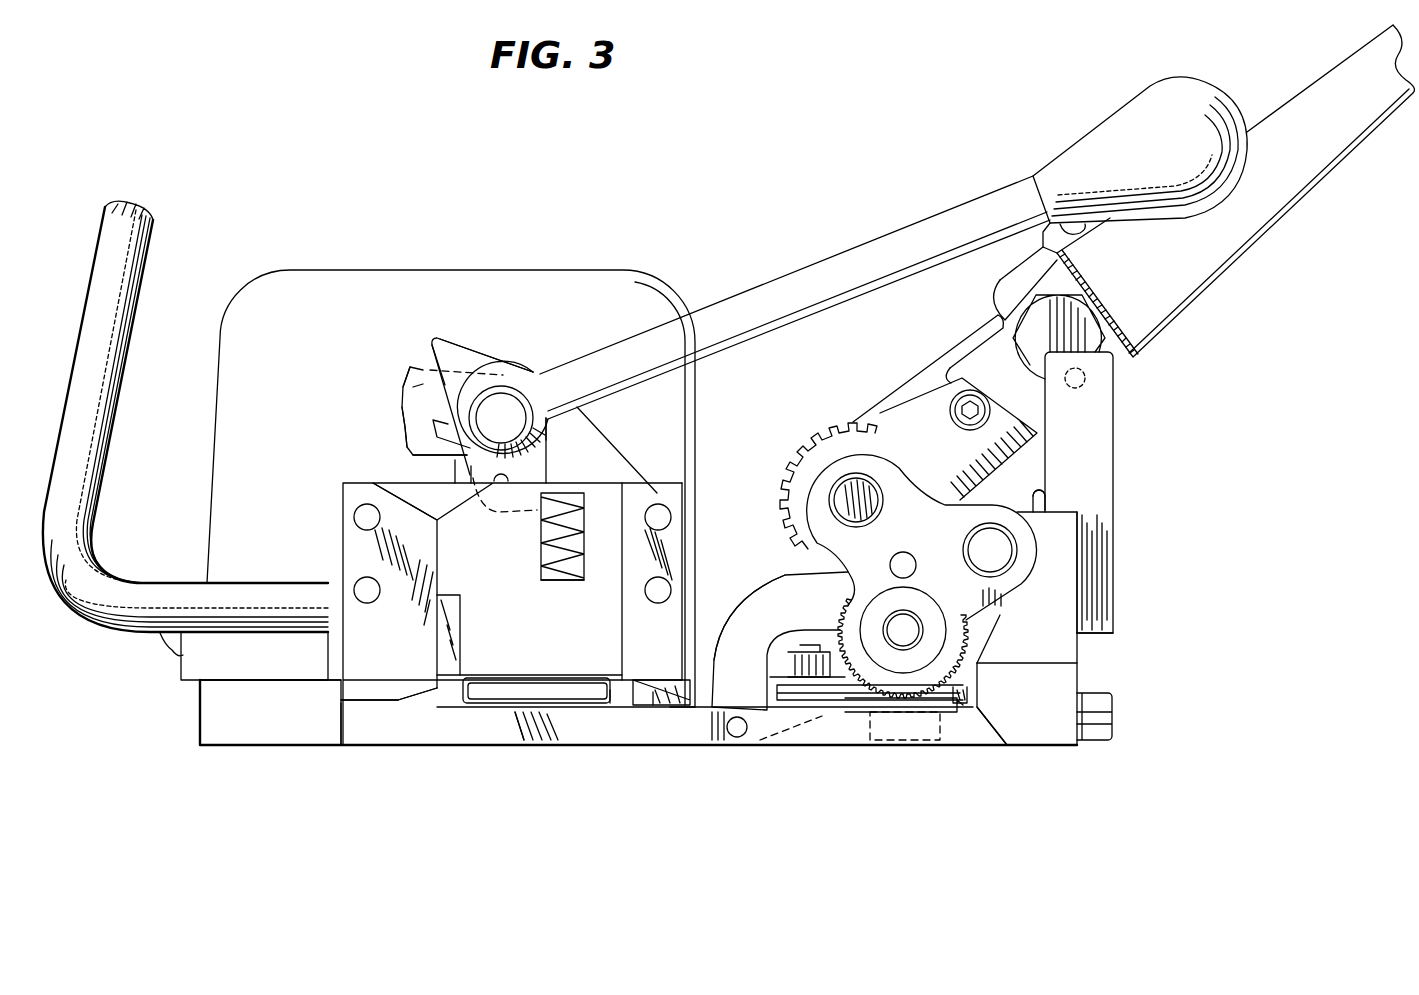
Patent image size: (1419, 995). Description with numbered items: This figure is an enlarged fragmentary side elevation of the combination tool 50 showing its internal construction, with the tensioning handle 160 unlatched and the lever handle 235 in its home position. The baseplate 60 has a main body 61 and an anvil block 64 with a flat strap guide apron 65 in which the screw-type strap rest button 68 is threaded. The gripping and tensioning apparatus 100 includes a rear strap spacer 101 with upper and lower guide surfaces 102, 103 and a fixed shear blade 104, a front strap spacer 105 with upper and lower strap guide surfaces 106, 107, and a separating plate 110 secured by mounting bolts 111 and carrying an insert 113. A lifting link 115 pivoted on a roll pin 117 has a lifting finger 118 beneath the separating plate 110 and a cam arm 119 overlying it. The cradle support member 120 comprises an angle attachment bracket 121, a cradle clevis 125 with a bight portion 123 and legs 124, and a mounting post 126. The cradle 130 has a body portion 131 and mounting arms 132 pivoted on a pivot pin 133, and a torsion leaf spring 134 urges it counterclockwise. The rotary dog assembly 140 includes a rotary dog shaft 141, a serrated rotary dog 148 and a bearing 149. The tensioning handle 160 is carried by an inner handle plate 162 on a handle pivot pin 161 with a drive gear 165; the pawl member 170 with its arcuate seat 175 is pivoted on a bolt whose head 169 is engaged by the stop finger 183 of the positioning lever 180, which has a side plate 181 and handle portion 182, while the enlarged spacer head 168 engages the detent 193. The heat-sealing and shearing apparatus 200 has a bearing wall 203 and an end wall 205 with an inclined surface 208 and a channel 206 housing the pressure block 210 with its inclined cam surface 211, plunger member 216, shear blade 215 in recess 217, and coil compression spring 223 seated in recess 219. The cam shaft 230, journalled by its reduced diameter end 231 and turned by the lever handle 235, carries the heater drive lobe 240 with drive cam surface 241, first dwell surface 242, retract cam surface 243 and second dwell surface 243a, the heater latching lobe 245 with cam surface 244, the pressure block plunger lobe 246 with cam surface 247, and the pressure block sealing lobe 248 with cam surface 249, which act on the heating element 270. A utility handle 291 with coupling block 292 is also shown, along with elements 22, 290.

The bolt 22 is at (1112, 723).
The combination tool 50 is at (712, 161).
The baseplate 60 is at (373, 748).
The main body 61 is at (272, 737).
The anvil block 64 is at (550, 745).
The strap guide apron 65 is at (613, 707).
The strap rest button 68 is at (870, 733).
The gripping and tensioning apparatus 100 is at (1142, 463).
The rear strap spacer 101 is at (357, 690).
The upper guide surface 102 is at (410, 677).
The lower guide surface 103 is at (357, 703).
The fixed shear blade 104 is at (430, 703).
The front strap spacer 105 is at (670, 695).
The upper strap guide surface 106 is at (653, 683).
The lower strap guide surface 107 is at (648, 703).
The separating plate 110 is at (953, 703).
The mounting bolts 111 is at (800, 627).
The insert 113 is at (967, 672).
The lifting link 115 is at (730, 618).
The roll pin 117 is at (740, 739).
The lifting finger 118 is at (793, 737).
The cam arm 119 is at (780, 593).
The cradle support member 120 is at (1105, 587).
The angle attachment bracket 121 is at (1058, 737).
The bight portion 123 is at (1077, 623).
The legs 124 is at (1062, 653).
The cradle clevis 125 is at (1060, 567).
The mounting post 126 is at (1100, 427).
The cradle 130 is at (928, 526).
The body portion 131 is at (897, 510).
The mounting arms 132 is at (1020, 625).
The pivot pin 133 is at (1003, 550).
The torsion leaf spring 134 is at (1045, 500).
The rotary dog assembly 140 is at (978, 633).
The rotary dog shaft 141 is at (913, 623).
The rotary dog 148 is at (982, 656).
The bearing 149 is at (890, 620).
The tensioning handle 160 is at (1303, 185).
The handle pivot pin 161 is at (863, 493).
The inner handle plate 162 is at (927, 383).
The drive gear 165 is at (797, 448).
The enlarged spacer head 168 is at (1077, 322).
The head 169 is at (950, 411).
The pawl member 170 is at (887, 388).
The arcuate seat 175 is at (1037, 493).
The positioning lever 180 is at (1010, 266).
The side plate 181 is at (1003, 298).
The handle portion 182 is at (1087, 215).
The stop finger 183 is at (952, 366).
The detent 193 is at (1085, 378).
The heat-sealing and shearing apparatus 200 is at (413, 234).
The bearing wall 203 is at (513, 367).
The end wall 205 is at (365, 542).
The channel 206 is at (630, 543).
The inclined surface 208 is at (393, 487).
The pressure block 210 is at (600, 502).
The inclined cam surface 211 is at (463, 467).
The shear blade 215 is at (440, 670).
The plunger member 216 is at (523, 473).
The recess 217 is at (453, 592).
The recess 219 is at (570, 580).
The coil compression spring 223 is at (537, 548).
The cam shaft 230 is at (546, 390).
The reduced diameter end 231 is at (547, 442).
The lever handle 235 is at (795, 283).
The heater drive lobe 240 is at (413, 370).
The drive cam surface 241 is at (437, 473).
The first dwell surface 242 is at (407, 437).
The retract cam surface 243 is at (402, 417).
The second dwell surface 243a is at (403, 388).
The cam surface 244 is at (491, 513).
The heater latching lobe 245 is at (547, 460).
The pressure block plunger lobe 246 is at (420, 413).
The cam surface 247 is at (413, 454).
The pressure block sealing lobe 248 is at (450, 343).
The cam surface 249 is at (420, 343).
The heating element 270 is at (510, 697).
The cover 290 is at (558, 273).
The utility handle 291 is at (138, 258).
The coupling block 292 is at (200, 667).